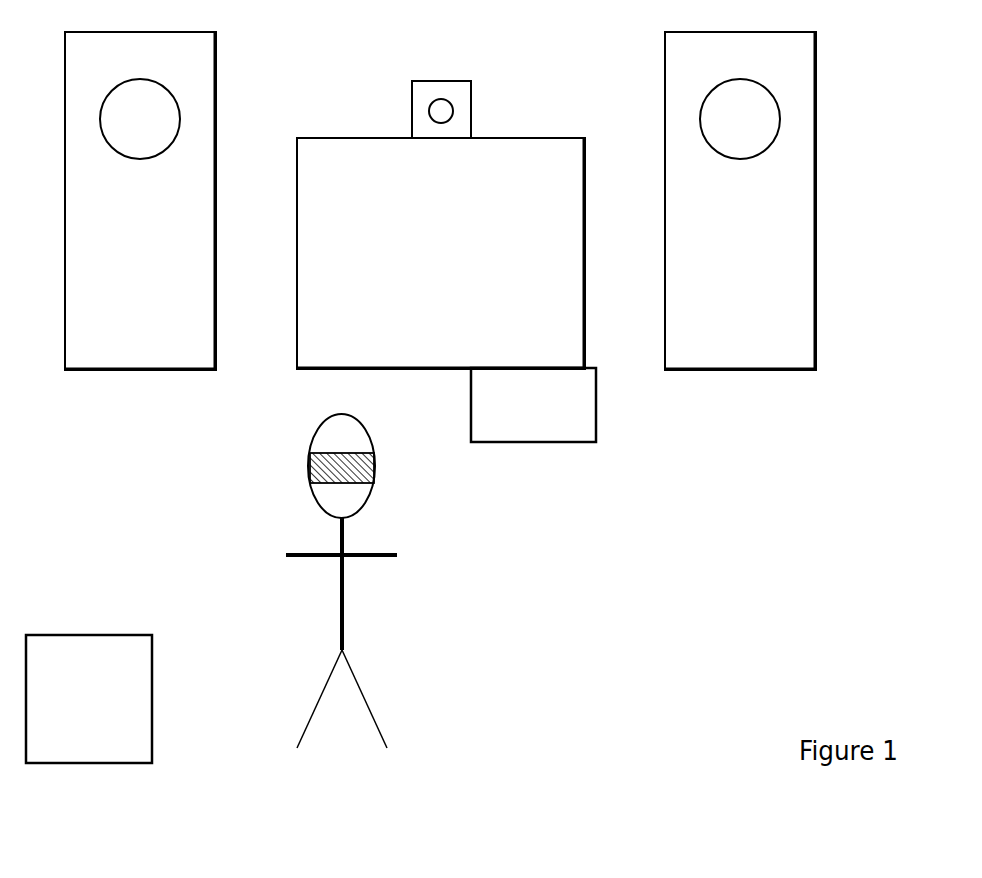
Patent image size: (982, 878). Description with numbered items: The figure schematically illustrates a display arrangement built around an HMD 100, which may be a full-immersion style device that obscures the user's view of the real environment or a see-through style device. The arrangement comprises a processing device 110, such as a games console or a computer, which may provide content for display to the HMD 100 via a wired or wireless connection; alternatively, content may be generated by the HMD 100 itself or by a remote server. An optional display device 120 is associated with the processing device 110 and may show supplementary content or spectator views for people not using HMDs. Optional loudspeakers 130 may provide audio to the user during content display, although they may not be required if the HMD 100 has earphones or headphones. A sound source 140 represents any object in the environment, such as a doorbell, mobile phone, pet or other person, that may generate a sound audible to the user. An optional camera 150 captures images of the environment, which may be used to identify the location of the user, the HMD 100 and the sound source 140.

The HMD 100 is at (375, 473).
The processing device 110 is at (557, 412).
The display device 120 is at (453, 274).
The loudspeakers 130 is at (175, 348).
The sound source 140 is at (112, 702).
The camera 150 is at (432, 80).